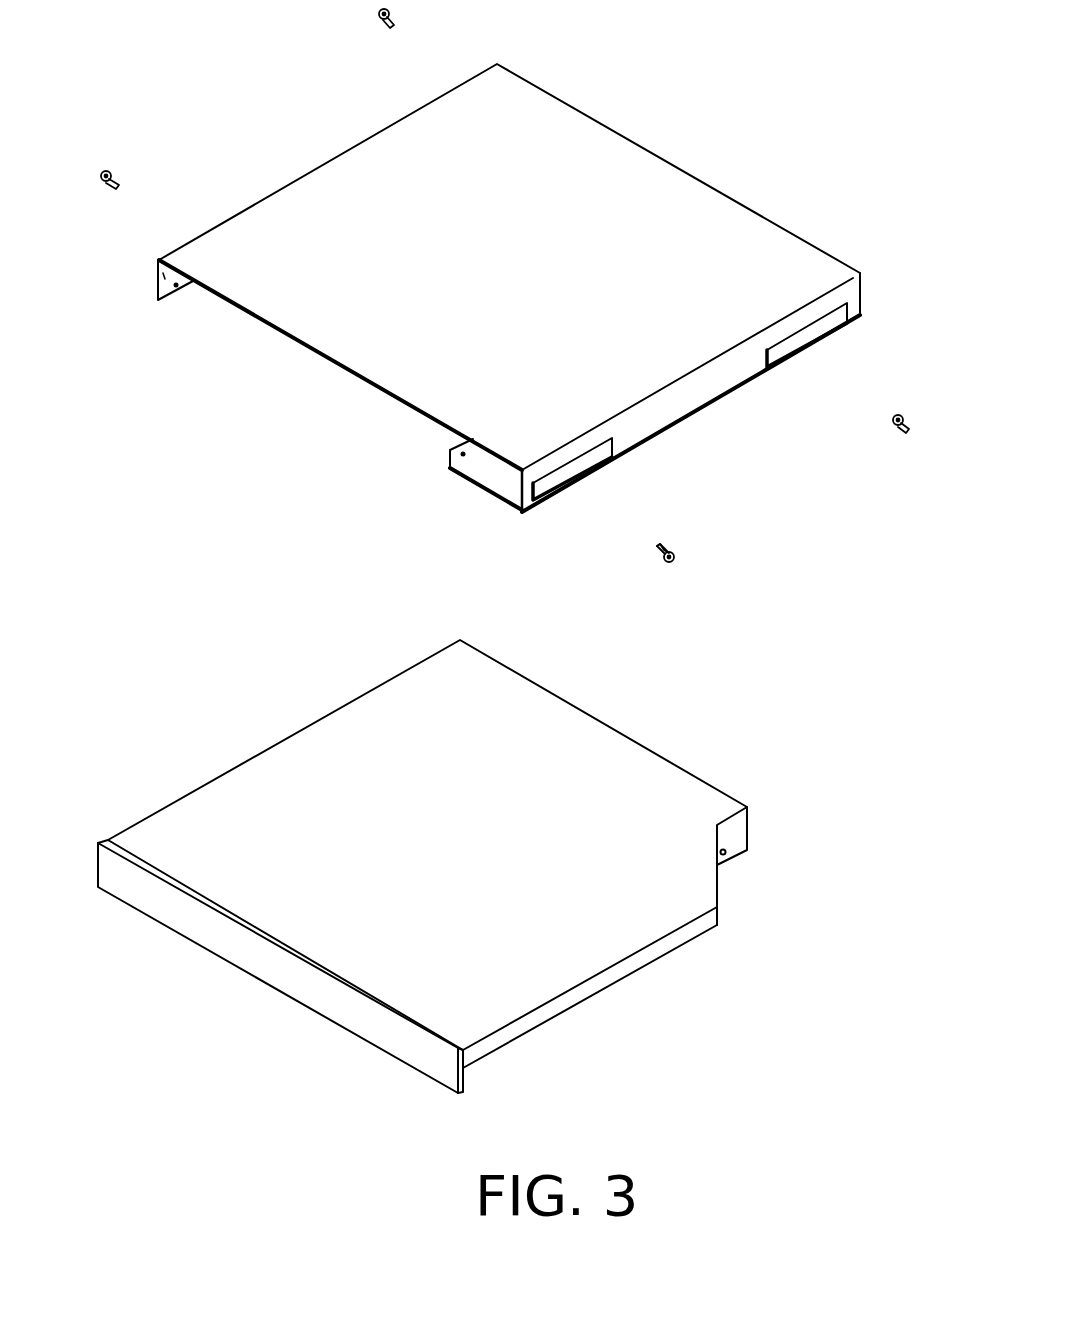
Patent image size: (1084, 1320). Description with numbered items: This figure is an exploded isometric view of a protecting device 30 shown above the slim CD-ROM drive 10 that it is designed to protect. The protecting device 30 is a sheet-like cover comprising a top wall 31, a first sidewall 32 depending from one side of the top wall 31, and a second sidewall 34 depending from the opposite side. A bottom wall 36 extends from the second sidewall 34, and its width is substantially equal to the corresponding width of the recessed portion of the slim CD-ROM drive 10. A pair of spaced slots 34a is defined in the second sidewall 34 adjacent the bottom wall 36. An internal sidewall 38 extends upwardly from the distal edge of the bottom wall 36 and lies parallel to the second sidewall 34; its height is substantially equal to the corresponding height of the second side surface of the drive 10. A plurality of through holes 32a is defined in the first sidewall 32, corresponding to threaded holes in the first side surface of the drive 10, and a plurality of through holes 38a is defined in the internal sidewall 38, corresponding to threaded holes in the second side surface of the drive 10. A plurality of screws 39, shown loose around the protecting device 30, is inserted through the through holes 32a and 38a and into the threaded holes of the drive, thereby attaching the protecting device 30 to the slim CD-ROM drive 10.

The slim CD-ROM drive 10 is at (637, 762).
The protecting device 30 is at (575, 79).
The top wall 31 is at (652, 192).
The first sidewall 32 is at (157, 283).
The through holes 32a is at (177, 288).
The second sidewall 34 is at (808, 313).
The spaced slots 34a is at (807, 336).
The bottom wall 36 is at (503, 481).
The internal sidewall 38 is at (447, 455).
The through holes 38a is at (457, 472).
The screws 39 is at (672, 565).